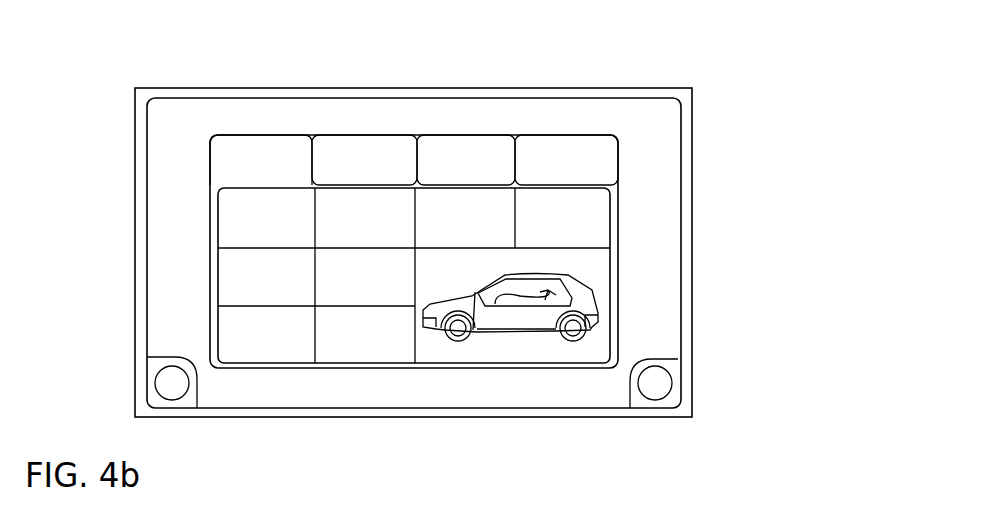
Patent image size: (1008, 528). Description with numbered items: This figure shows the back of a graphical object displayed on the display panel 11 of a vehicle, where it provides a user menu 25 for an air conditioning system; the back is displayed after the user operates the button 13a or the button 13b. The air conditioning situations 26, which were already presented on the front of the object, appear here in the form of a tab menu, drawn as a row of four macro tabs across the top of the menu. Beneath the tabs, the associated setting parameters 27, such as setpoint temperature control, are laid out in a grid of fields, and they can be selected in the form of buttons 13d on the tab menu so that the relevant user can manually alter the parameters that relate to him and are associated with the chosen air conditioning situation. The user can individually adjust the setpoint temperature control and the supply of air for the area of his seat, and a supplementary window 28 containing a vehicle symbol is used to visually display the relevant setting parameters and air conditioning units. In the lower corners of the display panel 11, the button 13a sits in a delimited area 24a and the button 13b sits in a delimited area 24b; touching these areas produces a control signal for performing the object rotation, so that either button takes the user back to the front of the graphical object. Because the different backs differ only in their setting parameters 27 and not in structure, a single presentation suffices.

The display panel 11 is at (687, 93).
The user menu 25 is at (210, 207).
The air conditioning situations 26 is at (545, 145).
The setting parameters 27 is at (495, 215).
The buttons 13d is at (234, 321).
The supplementary window 28 is at (597, 277).
The delimited area 24a is at (152, 367).
The button 13a is at (166, 383).
The delimited area 24b is at (670, 368).
The button 13b is at (657, 383).